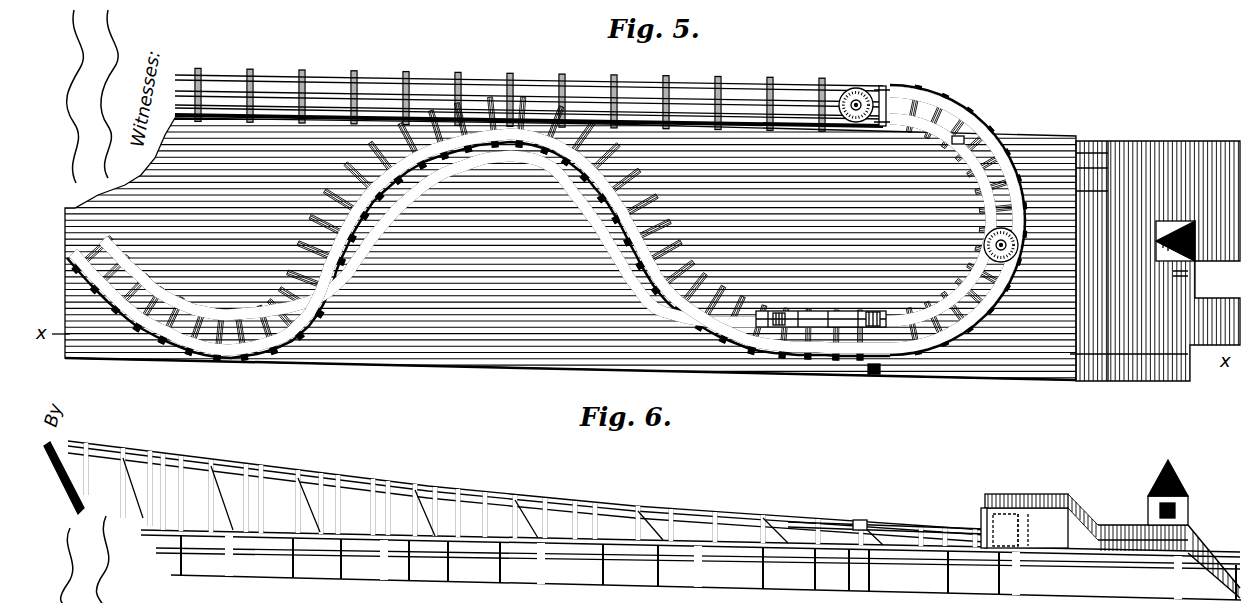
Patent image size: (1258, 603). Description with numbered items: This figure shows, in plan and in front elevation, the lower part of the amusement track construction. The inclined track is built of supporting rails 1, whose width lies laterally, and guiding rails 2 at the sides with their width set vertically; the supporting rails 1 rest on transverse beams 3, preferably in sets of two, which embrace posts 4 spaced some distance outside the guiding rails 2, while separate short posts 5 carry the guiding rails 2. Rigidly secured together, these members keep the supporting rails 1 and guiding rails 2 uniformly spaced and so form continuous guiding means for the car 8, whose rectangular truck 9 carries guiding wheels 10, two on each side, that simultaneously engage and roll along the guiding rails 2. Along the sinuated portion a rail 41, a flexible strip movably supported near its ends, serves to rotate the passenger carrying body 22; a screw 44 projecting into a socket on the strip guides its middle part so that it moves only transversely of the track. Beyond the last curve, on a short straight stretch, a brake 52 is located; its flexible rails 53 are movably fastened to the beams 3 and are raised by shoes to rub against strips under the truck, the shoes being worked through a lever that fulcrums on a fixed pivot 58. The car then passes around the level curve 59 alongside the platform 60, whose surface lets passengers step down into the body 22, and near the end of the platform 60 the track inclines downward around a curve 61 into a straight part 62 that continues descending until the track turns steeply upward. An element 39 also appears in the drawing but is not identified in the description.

In FIG. 5, the supporting rails 1 is at (330, 80).
In FIG. 6, the supporting rails 1 is at (200, 455).
In FIG. 5, the guiding rails 2 is at (275, 65).
In FIG. 6, the guiding rails 2 is at (173, 447).
In FIG. 5, the transverse beams 3 is at (350, 92).
In FIG. 6, the transverse beams 3 is at (285, 465).
In FIG. 5, the posts 4 is at (866, 366).
In FIG. 6, the posts 4 is at (640, 510).
In FIG. 5, the short posts 5 is at (882, 338).
In FIG. 5, the car 8 is at (853, 84).
In FIG. 6, the car 8 is at (818, 517).
In FIG. 5, the truck 9 is at (880, 110).
In FIG. 5, the guiding wheels 10 is at (915, 122).
In FIG. 5, the passenger carrying body 22 is at (832, 82).
In FIG. 5, the standard 39 is at (877, 85).
In FIG. 6, the standard 39 is at (975, 520).
In FIG. 5, the rail 41 is at (540, 138).
In FIG. 6, the rail 41 is at (245, 457).
In FIG. 6, the screw 44 is at (330, 470).
In FIG. 5, the brake 52 is at (826, 342).
In FIG. 5, the flexible rails 53 is at (840, 350).
In FIG. 5, the pivot 58 is at (935, 345).
In FIG. 6, the pivot 58 is at (850, 512).
In FIG. 5, the curve 59 is at (960, 170).
In FIG. 6, the curve 59 is at (976, 540).
In FIG. 5, the platform 60 is at (1037, 200).
In FIG. 6, the platform 60 is at (1010, 490).
In FIG. 5, the curve 61 is at (956, 135).
In FIG. 5, the straight part 62 is at (722, 98).
In FIG. 6, the straight part 62 is at (785, 548).